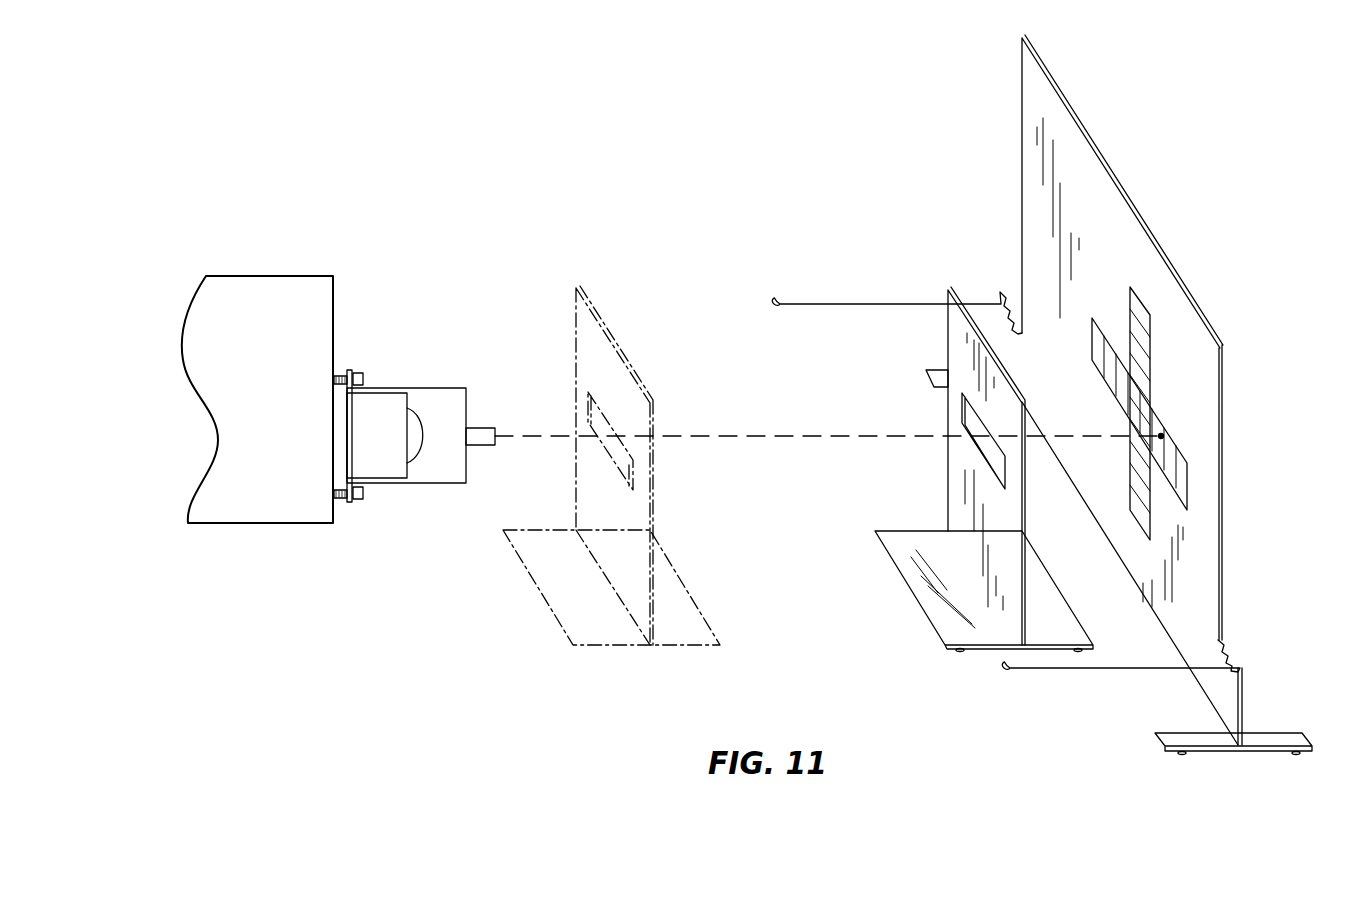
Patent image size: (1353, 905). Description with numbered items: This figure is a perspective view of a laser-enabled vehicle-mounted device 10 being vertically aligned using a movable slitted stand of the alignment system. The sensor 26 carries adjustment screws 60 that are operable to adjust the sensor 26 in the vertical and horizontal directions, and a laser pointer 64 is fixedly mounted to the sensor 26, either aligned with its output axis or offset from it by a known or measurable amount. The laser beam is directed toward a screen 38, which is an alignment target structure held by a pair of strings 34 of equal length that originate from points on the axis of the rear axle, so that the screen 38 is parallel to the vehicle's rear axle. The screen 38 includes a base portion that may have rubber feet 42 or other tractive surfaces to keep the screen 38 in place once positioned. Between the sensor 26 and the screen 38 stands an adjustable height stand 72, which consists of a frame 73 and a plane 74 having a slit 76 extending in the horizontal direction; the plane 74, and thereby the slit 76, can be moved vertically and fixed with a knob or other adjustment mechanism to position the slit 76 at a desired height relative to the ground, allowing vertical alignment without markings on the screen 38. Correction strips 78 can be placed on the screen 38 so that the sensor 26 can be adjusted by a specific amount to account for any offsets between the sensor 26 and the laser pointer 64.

The imaging device housing 10 is at (292, 276).
The sensor 26 is at (390, 418).
The laser pointer 64 is at (478, 427).
The adjustment screws 60 is at (365, 492).
The adjustable height stand 72 is at (585, 335).
The slit 76 is at (603, 398).
The plane 74 is at (593, 490).
The frame 73 is at (568, 590).
The strings 34 is at (839, 304).
The screen 38 is at (1145, 227).
The correction strips 78 is at (1170, 455).
The rubber feet 42 is at (1182, 755).